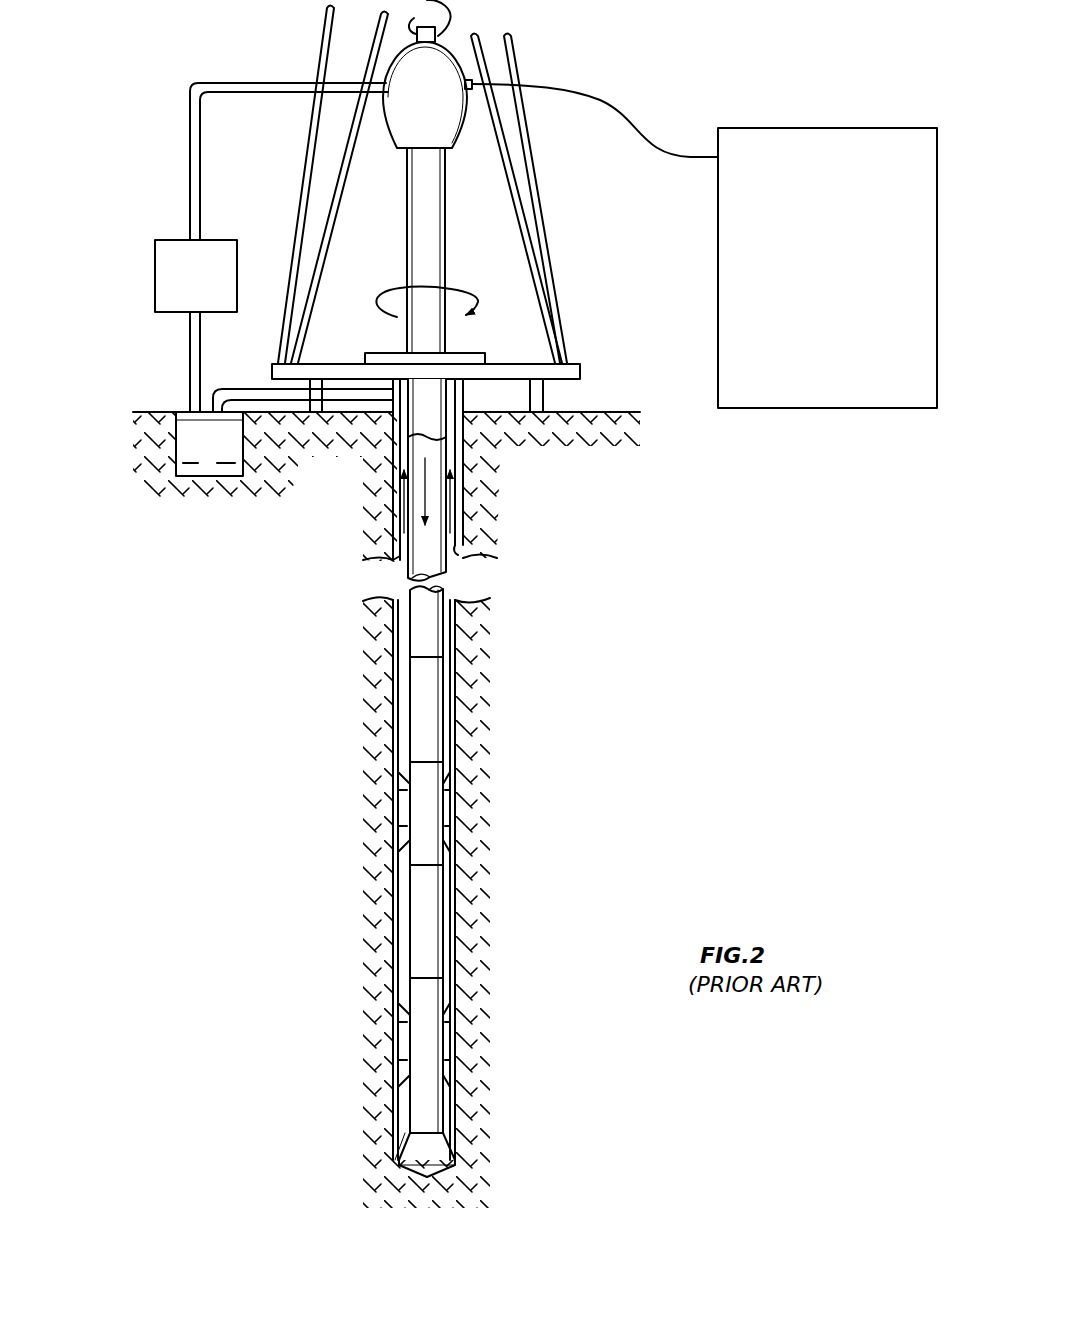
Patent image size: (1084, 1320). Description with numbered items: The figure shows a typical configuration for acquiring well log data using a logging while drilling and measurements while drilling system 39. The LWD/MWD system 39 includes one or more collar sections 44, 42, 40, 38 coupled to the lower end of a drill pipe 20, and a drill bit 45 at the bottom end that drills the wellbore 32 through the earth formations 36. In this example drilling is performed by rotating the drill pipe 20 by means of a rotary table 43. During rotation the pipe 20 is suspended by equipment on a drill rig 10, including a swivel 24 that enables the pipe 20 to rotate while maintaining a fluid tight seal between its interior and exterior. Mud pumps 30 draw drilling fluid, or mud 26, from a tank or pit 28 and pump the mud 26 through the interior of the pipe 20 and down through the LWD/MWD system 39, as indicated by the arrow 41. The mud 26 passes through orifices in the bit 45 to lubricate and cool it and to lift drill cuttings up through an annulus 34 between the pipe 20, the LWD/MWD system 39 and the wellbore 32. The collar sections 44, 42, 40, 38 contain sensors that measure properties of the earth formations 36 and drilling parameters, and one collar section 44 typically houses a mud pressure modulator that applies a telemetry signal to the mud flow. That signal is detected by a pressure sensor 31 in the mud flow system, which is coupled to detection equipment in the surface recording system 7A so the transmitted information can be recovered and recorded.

The surface recording system 7A is at (850, 128).
The drill rig 10 is at (620, 383).
The drill pipe 20 is at (433, 177).
The swivel 24 is at (413, 133).
The drilling fluid (mud) 26 is at (213, 470).
The tank or pit 28 is at (176, 455).
The mud pumps 30 is at (167, 313).
The pressure sensor 31 is at (470, 89).
The wellbore 32 is at (448, 565).
The annulus 34 is at (452, 510).
The earth formations 36 is at (690, 645).
The collar section 38 is at (423, 1042).
The LWD/MWD system 39 is at (418, 646).
The collar section 40 is at (420, 903).
The arrow 41 is at (423, 492).
The collar section 42 is at (417, 807).
The rotary table 43 is at (464, 351).
The collar section 44 is at (405, 682).
The drill bit 45 is at (415, 1145).